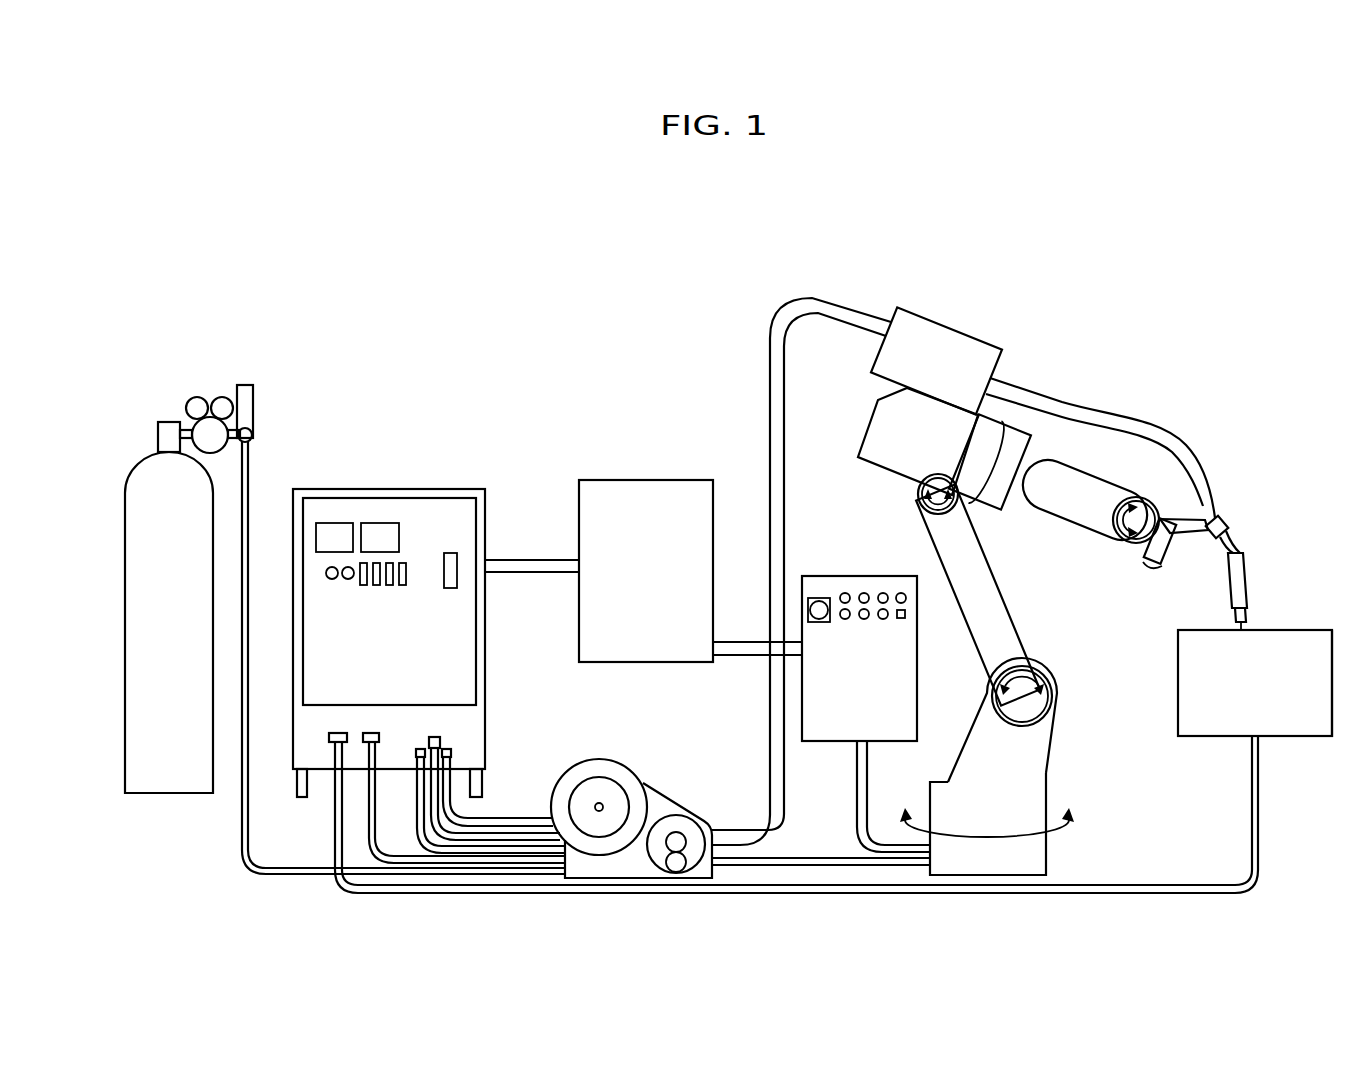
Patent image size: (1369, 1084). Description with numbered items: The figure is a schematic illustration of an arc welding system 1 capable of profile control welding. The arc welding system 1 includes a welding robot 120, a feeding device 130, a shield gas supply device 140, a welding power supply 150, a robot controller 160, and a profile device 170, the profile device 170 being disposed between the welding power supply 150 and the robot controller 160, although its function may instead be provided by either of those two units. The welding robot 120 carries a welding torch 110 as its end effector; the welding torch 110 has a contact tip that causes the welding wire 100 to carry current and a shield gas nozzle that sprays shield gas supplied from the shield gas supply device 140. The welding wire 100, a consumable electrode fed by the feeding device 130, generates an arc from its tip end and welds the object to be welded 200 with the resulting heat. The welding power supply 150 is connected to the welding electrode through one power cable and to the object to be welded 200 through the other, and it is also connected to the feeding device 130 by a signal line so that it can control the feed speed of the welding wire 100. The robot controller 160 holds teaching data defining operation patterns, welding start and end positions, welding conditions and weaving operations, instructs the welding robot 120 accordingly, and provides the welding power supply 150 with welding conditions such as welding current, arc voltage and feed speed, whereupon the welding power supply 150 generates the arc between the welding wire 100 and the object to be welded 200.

The arc welding system 1 is at (1146, 248).
The welding wire 100 is at (1242, 628).
The welding torch 110 is at (1248, 579).
The welding robot 120 is at (868, 428).
The feeding device 130 is at (663, 780).
The shield gas supply device 140 is at (133, 438).
The welding power supply 150 is at (490, 472).
The robot controller 160 is at (856, 575).
The profile device 170 is at (643, 467).
The object to be welded 200 is at (1178, 680).